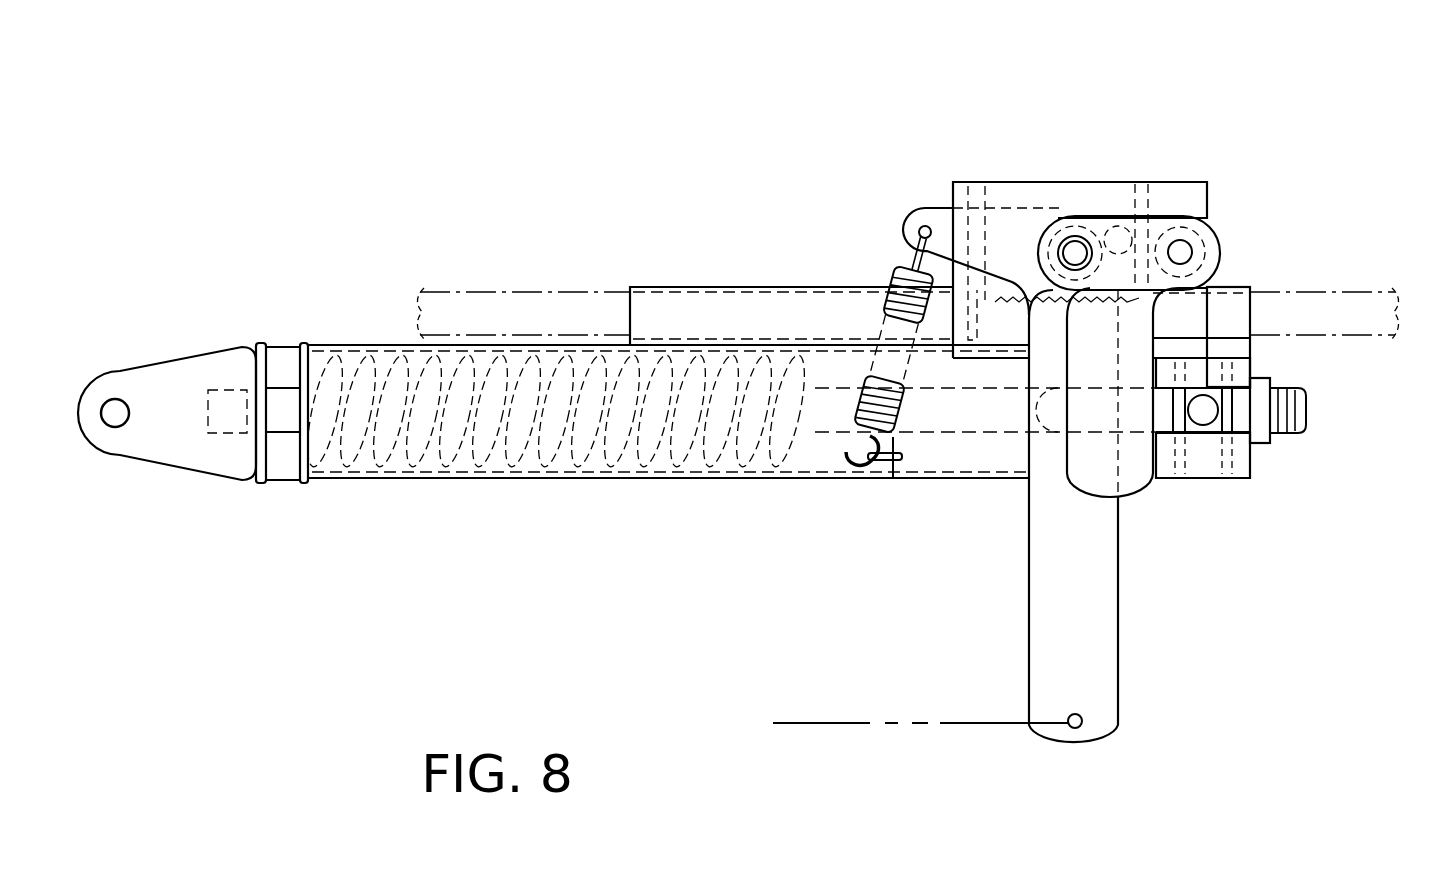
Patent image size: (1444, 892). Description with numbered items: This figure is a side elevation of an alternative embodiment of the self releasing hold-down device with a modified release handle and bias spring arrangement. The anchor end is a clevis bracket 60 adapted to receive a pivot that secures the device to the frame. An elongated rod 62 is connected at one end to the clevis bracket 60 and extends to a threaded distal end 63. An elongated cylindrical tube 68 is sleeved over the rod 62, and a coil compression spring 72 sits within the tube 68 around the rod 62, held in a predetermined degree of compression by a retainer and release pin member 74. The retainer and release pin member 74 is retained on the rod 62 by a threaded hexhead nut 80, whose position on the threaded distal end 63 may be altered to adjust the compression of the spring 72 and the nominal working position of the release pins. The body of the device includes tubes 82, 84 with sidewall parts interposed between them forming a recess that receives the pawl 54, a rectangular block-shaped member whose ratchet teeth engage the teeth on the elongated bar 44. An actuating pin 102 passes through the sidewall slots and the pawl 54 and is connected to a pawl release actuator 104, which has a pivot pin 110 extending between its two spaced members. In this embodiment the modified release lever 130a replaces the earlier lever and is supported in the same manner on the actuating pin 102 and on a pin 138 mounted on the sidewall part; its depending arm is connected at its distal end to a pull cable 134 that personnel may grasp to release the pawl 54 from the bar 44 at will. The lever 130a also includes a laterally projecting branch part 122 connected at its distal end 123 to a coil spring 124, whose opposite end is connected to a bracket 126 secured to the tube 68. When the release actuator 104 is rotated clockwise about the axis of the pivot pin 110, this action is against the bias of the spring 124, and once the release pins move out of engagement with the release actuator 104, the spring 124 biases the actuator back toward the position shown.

The elongated bar 44 is at (1395, 292).
The pawl 54 is at (1000, 200).
The clevis bracket 60 is at (203, 473).
The elongated rod 62 is at (278, 387).
The threaded distal end 63 is at (1308, 400).
The elongated cylindrical tube 68 is at (596, 484).
The coil compression spring 72 is at (402, 460).
The retainer and release pin member 74 is at (1240, 411).
The threaded hexhead nut 80 is at (1260, 445).
The tube 82 is at (731, 287).
The tube 84 is at (1236, 288).
The actuating pin 102 is at (1087, 238).
The pawl release actuator 104 is at (1163, 460).
The pivot pin 110 is at (1183, 250).
The laterally projecting branch part 122 is at (937, 208).
The distal end 123 is at (903, 228).
The coil spring 124 is at (905, 392).
The bracket 126 is at (888, 478).
The modified release lever 130a is at (1022, 500).
The pull cable 134 is at (838, 723).
The pin 138 is at (1130, 230).